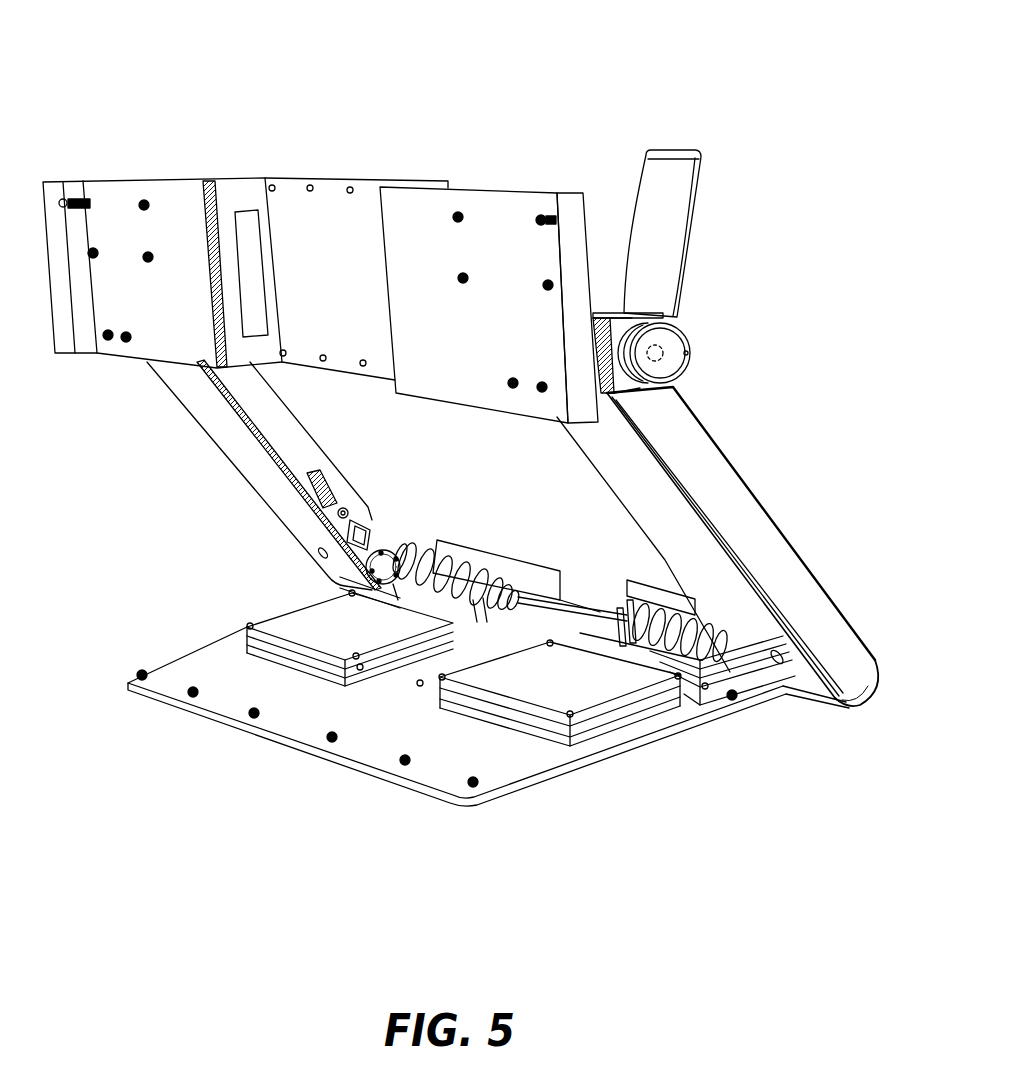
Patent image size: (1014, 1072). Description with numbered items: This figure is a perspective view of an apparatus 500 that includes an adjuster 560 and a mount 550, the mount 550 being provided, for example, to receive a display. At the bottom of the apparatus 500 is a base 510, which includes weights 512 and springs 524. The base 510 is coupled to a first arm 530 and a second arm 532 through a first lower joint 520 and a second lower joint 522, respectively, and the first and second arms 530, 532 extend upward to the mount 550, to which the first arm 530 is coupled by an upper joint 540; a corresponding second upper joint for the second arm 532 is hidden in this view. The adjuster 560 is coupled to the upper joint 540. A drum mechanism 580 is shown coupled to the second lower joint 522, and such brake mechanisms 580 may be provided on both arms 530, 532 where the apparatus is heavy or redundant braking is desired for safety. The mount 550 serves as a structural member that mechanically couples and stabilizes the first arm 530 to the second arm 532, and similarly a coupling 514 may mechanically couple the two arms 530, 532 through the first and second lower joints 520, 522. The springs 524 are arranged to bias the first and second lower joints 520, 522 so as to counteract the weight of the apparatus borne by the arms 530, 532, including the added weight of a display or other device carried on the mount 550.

The apparatus 500 is at (243, 40).
The base 510 is at (175, 673).
The weights 512 is at (293, 622).
The coupling 514 is at (570, 602).
The first lower joint 520 is at (853, 682).
The second lower joint 522 is at (320, 573).
The springs 524 is at (440, 587).
The first arm 530 is at (713, 473).
The second arm 532 is at (235, 437).
The upper joint 540 is at (662, 352).
The mount 550 is at (320, 185).
The adjuster 560 is at (683, 232).
The drum mechanism 580 is at (405, 510).